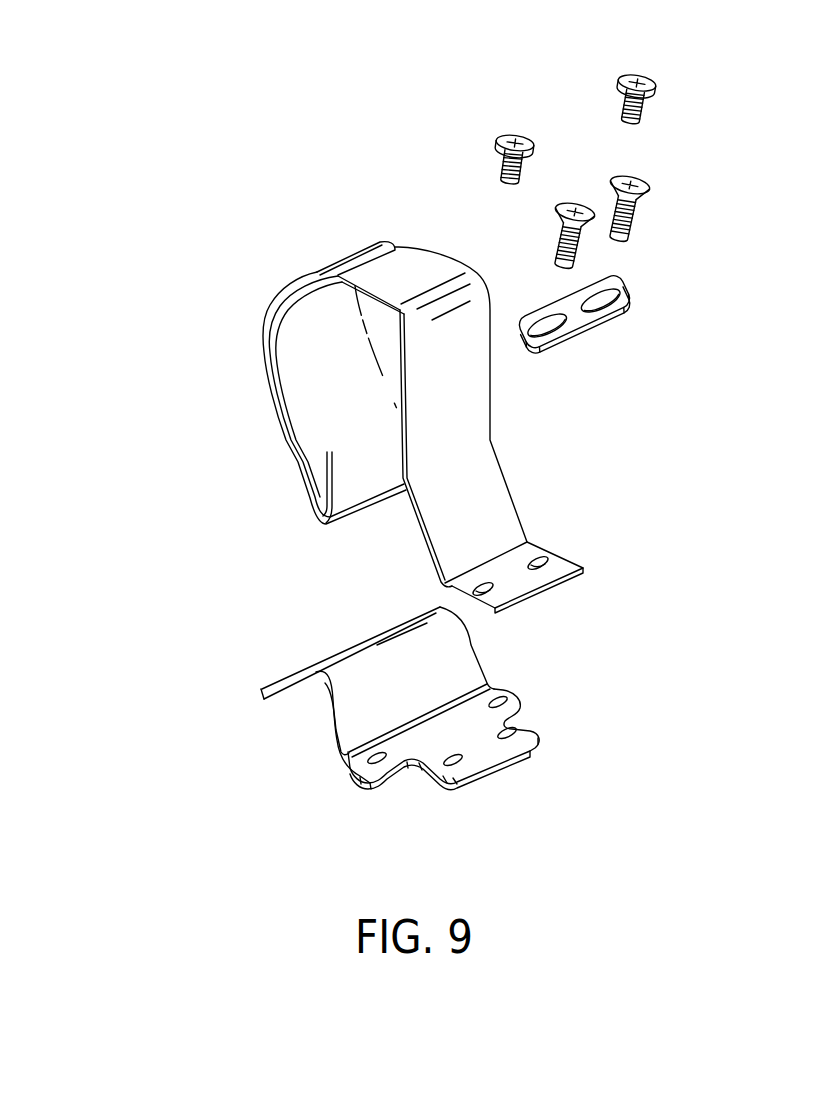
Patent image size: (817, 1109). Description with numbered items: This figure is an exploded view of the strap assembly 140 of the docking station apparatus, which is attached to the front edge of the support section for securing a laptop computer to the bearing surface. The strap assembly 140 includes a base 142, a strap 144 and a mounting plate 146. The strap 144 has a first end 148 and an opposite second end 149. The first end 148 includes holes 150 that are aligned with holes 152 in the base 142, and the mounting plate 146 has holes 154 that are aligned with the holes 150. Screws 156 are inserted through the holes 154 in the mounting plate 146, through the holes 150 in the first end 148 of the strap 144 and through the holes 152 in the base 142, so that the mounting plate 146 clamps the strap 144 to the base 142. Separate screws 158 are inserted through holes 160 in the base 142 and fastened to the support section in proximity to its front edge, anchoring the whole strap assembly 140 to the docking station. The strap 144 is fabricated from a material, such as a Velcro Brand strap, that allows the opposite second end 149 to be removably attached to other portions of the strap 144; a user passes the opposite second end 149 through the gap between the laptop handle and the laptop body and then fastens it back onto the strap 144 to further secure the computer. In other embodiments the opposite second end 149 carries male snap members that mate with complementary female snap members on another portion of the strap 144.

The strap assembly 140 is at (727, 45).
The base 142 is at (411, 713).
The strap 144 is at (410, 411).
The mounting plate 146 is at (601, 335).
The first end 148 is at (530, 566).
The opposite second end 149 is at (357, 256).
The holes 150 is at (490, 593).
The holes 152 is at (463, 762).
The holes 154 is at (627, 303).
The screws 156 is at (577, 253).
The screws 158 is at (617, 97).
The holes 160 is at (503, 698).